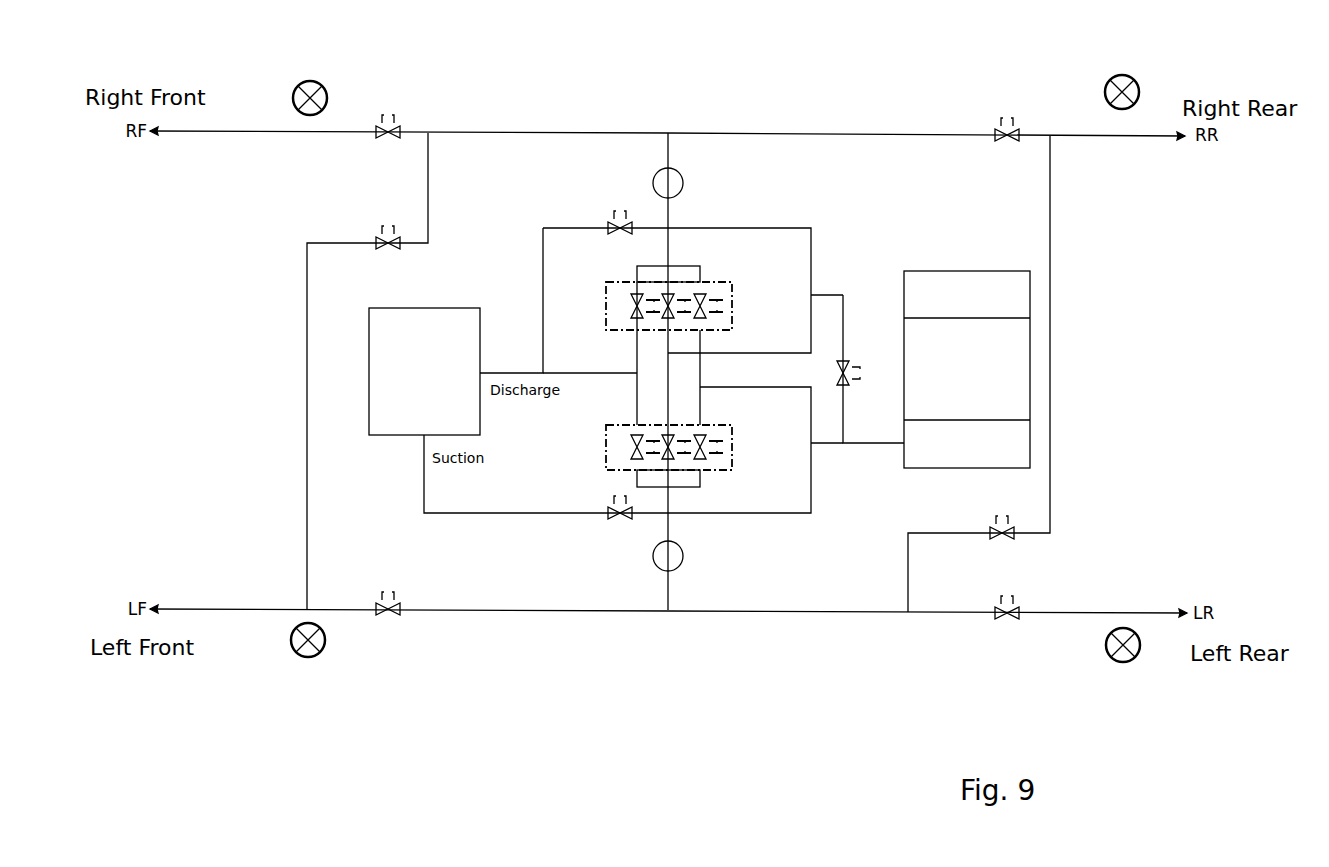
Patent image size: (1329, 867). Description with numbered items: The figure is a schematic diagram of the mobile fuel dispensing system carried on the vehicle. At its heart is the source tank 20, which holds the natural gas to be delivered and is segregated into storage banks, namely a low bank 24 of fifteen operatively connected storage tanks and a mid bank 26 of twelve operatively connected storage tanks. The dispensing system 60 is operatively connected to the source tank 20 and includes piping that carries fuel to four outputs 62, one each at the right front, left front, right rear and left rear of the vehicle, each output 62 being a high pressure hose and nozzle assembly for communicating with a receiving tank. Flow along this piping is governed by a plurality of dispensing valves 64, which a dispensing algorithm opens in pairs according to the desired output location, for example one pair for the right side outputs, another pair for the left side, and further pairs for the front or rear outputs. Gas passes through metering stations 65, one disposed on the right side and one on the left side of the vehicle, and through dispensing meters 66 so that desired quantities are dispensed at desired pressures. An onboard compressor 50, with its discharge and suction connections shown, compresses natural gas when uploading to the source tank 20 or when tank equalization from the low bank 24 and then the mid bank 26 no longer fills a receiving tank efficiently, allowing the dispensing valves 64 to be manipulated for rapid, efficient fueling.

The source tank 20 is at (1078, 348).
The low bank 24 is at (940, 468).
The mid bank 26 is at (968, 270).
The compressor 50 is at (364, 418).
The dispensing system 60 is at (268, 243).
The outputs 62 is at (298, 84).
The dispensing valves 64 is at (410, 117).
The metering stations 65 is at (727, 302).
The dispensing meters 66 is at (683, 183).